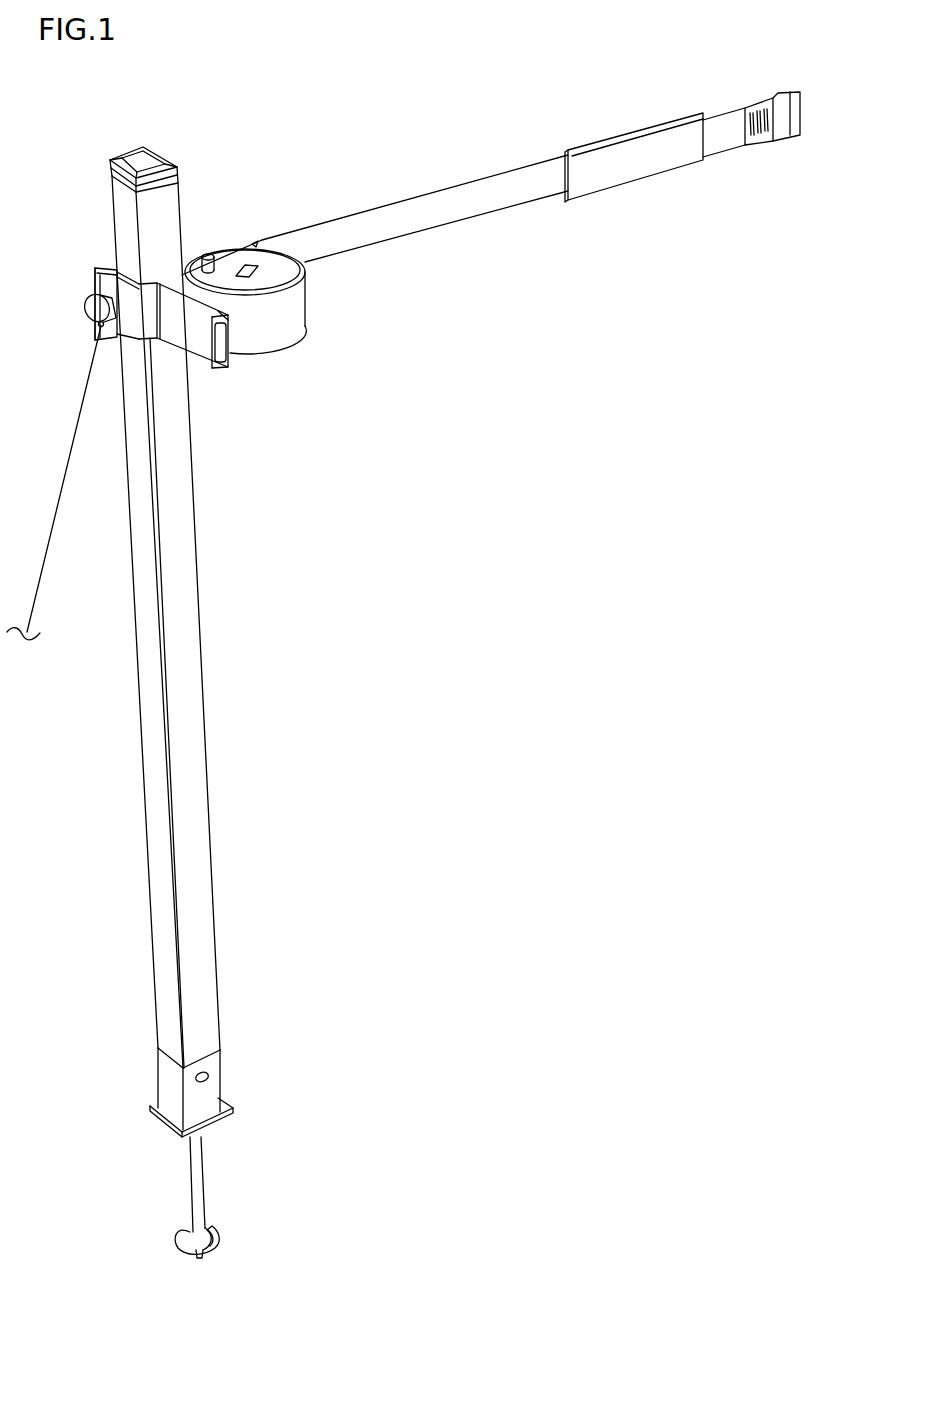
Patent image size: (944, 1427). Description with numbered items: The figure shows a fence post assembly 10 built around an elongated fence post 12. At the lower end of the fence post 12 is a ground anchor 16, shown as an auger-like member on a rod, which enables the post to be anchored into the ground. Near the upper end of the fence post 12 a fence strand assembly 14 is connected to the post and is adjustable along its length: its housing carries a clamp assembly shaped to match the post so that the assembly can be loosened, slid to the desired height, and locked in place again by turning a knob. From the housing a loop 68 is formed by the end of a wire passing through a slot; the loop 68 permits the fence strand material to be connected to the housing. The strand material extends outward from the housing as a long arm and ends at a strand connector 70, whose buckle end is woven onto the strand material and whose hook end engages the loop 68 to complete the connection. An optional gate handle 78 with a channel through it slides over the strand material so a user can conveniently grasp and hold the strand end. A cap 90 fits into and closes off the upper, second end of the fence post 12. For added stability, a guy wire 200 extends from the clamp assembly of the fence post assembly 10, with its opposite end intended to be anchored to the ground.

The fence post assembly 10 is at (320, 503).
The fence post 12 is at (185, 645).
The fence strand assembly 14 is at (228, 208).
The ground anchor 16 is at (255, 1189).
The loop 68 is at (231, 355).
The strand connector 70 is at (777, 150).
The gate handle 78 is at (627, 204).
The cap 90 is at (123, 162).
The guy wire 200 is at (83, 402).